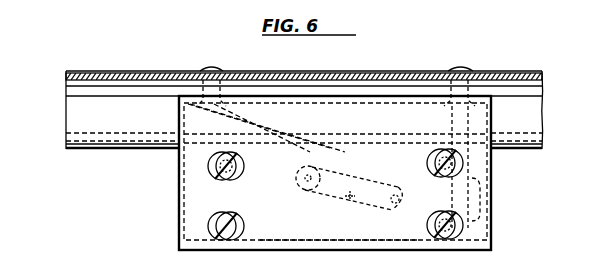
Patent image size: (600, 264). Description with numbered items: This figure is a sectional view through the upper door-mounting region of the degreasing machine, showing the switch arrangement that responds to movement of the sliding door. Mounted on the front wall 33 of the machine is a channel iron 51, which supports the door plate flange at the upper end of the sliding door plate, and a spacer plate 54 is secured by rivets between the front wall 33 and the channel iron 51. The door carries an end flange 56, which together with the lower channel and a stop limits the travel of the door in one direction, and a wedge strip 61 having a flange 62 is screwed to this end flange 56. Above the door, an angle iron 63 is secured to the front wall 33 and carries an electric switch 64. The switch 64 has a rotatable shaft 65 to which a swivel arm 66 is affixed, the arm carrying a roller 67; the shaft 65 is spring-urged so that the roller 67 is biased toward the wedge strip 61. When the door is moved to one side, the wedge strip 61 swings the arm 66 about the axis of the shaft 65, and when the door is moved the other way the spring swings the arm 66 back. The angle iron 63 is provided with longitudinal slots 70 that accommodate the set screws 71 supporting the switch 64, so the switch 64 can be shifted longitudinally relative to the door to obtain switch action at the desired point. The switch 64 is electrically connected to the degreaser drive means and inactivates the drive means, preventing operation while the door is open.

The front wall 33 is at (352, 72).
The channel iron 51 is at (290, 173).
The spacer plate 54 is at (152, 81).
The end flange 56 is at (462, 124).
The wedge strip 61 is at (259, 126).
The flange 62 is at (458, 226).
The angle iron 63 is at (390, 121).
The electric switch 64 is at (289, 241).
The rotatable shaft 65 is at (394, 206).
The swivel arm 66 is at (350, 199).
The roller 67 is at (298, 170).
The longitudinal slots 70 is at (208, 170).
The set screws 71 is at (232, 170).